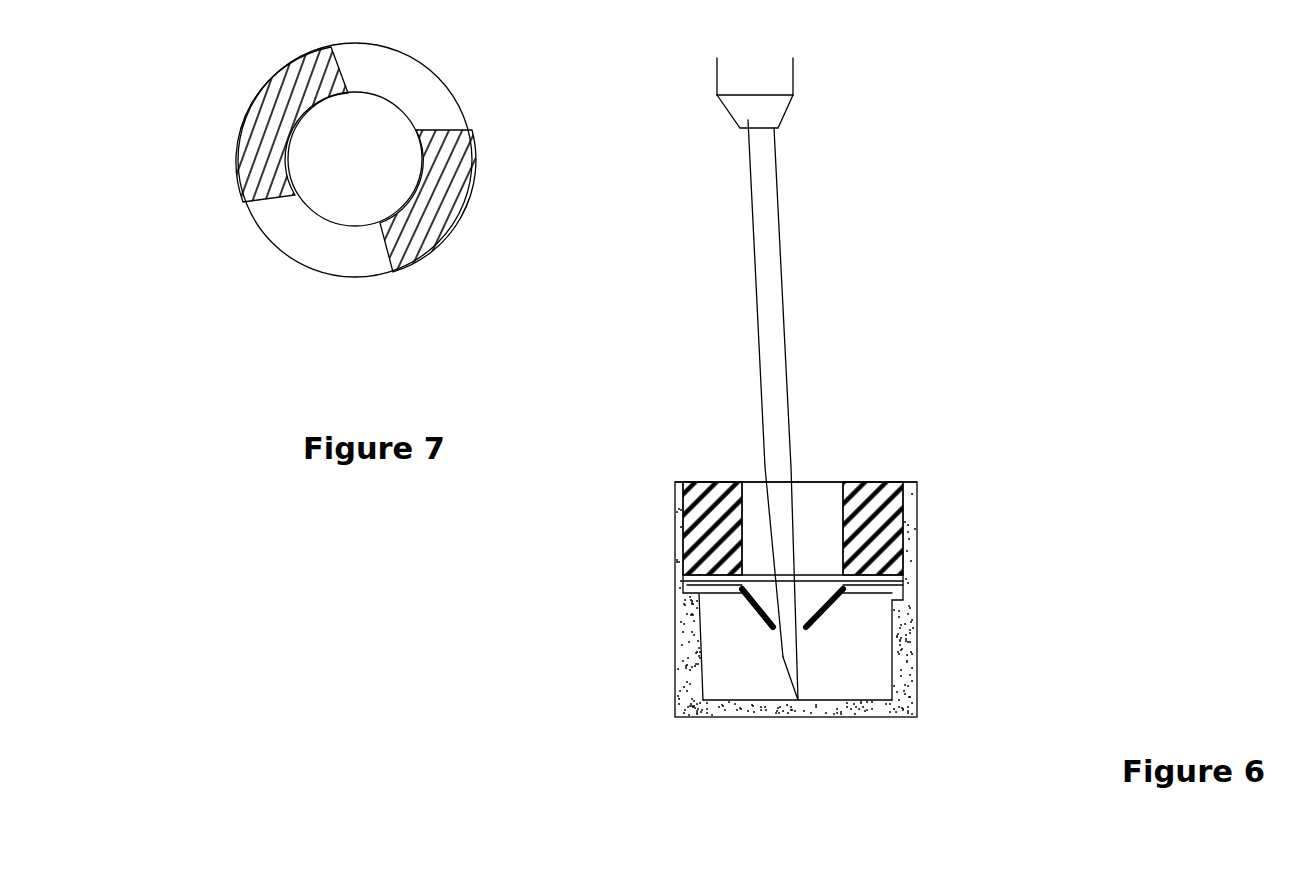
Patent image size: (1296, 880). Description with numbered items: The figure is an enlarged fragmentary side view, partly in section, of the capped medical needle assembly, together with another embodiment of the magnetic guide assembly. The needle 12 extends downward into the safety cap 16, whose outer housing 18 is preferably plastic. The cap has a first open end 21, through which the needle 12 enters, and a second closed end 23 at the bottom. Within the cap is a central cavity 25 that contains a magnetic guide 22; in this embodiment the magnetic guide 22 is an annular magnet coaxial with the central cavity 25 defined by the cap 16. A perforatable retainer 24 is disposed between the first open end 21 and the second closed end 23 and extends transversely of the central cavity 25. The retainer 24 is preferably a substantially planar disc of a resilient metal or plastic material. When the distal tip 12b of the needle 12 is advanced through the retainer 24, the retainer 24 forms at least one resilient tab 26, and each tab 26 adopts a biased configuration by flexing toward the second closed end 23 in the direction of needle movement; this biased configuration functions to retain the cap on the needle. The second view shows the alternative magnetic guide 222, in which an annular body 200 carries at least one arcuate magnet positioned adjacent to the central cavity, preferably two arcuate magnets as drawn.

In FIG. 6, the needle 12 is at (775, 387).
In FIG. 6, the distal tip end 12b is at (790, 642).
In FIG. 6, the cap 16 is at (933, 622).
In FIG. 6, the outer housing 18 is at (687, 673).
In FIG. 6, the first open end 21 is at (673, 485).
In FIG. 6, the magnetic guide 22 is at (712, 527).
In FIG. 6, the second closed end 23 is at (700, 718).
In FIG. 6, the perforatable retainer 24 is at (918, 587).
In FIG. 6, the central cavity 25 is at (758, 492).
In FIG. 6, the resilient tab 26 is at (830, 607).
In FIG. 7, the annular ring 200 is at (347, 183).
In FIG. 7, the magnetic guide 222 is at (252, 150).